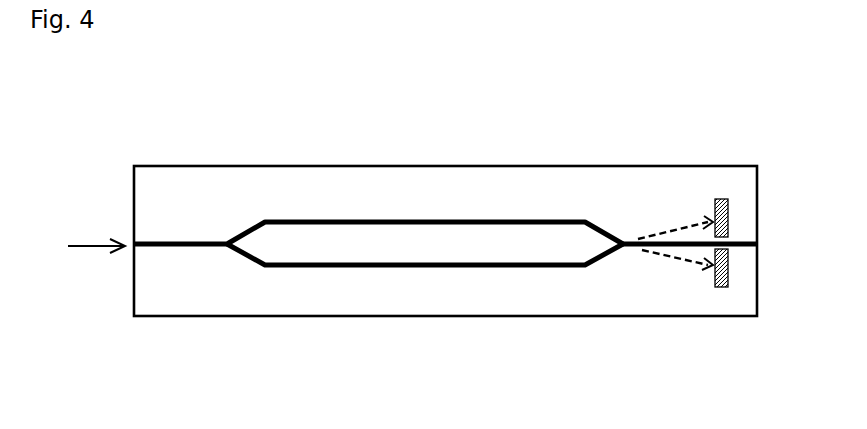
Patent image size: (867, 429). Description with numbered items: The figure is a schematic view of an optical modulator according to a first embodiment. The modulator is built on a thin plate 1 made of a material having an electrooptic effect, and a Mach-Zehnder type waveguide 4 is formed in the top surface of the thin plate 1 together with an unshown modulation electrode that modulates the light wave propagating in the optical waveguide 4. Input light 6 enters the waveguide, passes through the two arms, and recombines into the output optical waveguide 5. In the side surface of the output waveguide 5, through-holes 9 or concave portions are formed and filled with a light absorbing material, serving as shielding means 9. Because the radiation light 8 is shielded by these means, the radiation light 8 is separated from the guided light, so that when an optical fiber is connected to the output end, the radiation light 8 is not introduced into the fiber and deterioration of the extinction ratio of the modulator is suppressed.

The thin plate 1 is at (442, 198).
The Mach-Zehnder type waveguide 4 is at (475, 267).
The output optical waveguide 5 is at (689, 240).
The input light 6 is at (92, 247).
The radiation light 8 is at (666, 243).
The shielding means 9 is at (728, 218).